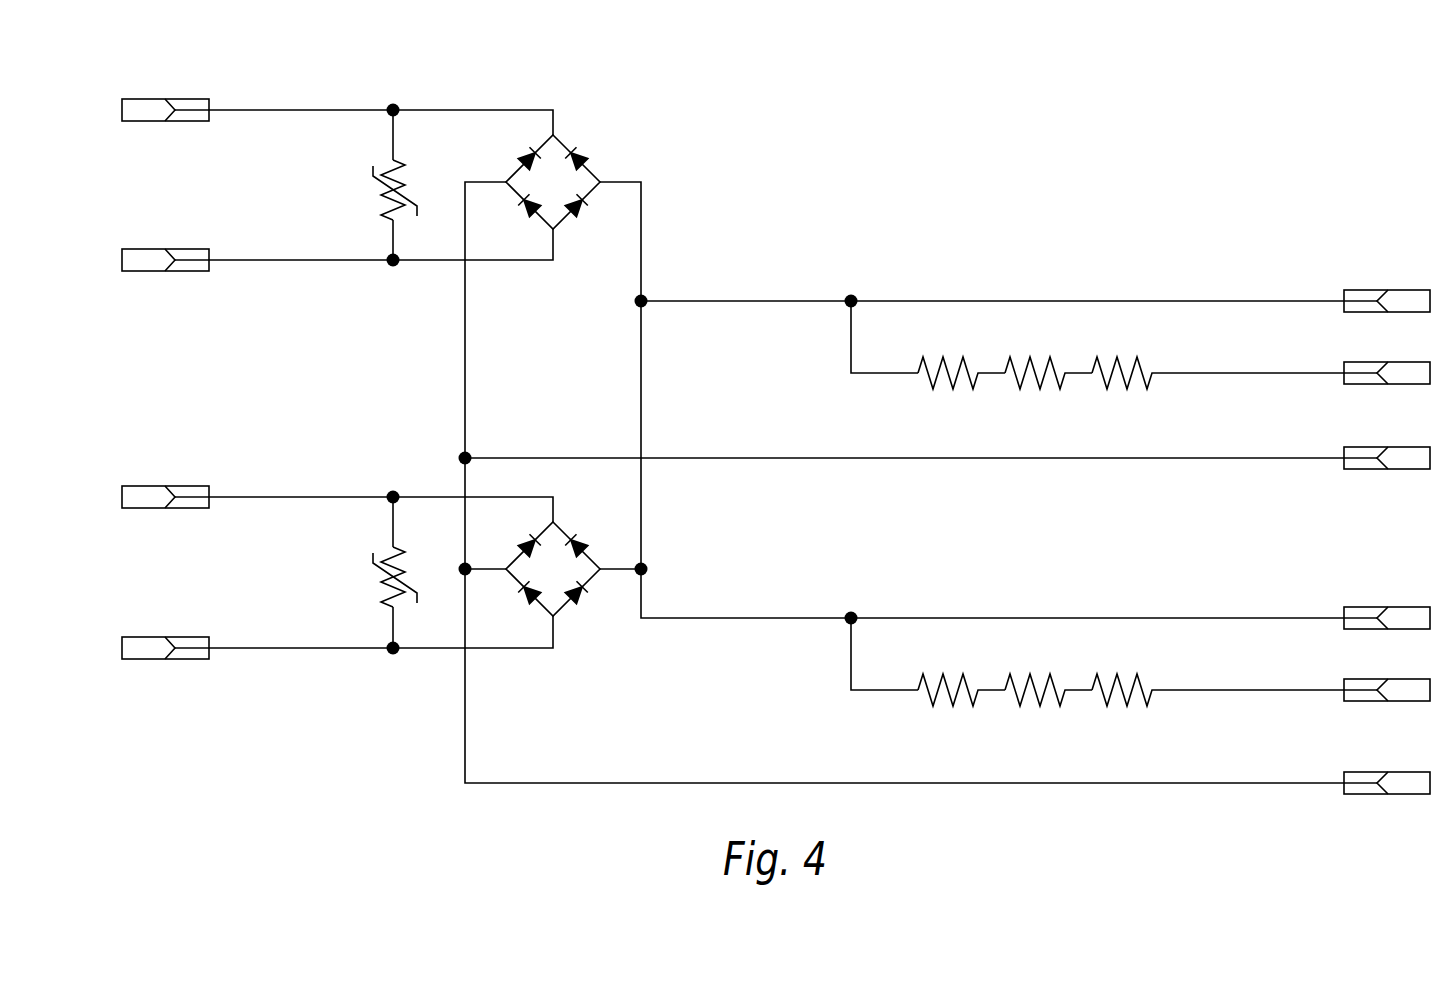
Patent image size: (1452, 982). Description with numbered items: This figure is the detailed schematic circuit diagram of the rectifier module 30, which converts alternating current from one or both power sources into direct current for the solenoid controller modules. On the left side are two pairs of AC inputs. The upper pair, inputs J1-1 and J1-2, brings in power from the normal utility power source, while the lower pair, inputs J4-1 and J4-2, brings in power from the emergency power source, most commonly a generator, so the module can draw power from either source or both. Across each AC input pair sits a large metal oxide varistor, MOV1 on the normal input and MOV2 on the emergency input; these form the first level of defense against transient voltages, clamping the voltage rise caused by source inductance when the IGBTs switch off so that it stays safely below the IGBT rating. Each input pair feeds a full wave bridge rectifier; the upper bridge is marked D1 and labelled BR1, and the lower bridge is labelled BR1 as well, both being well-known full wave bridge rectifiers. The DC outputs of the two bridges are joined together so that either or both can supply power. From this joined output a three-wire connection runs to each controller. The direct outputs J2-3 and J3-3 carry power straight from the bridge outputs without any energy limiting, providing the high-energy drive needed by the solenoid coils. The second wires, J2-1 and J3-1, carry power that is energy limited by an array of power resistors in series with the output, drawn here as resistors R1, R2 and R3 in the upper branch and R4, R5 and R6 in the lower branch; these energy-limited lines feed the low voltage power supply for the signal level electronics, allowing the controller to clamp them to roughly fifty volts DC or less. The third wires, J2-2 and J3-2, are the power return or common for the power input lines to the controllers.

The rectifier module 30 is at (800, 137).
The normal power source input J1-1 is at (165, 97).
The normal power source input J1-2 is at (165, 247).
The emergency power source input J4-1 is at (165, 486).
The emergency power source input J4-2 is at (165, 637).
The energy-limited output J2-1 is at (1387, 360).
The power return output J2-2 is at (1387, 446).
The direct rectifier output J2-3 is at (1387, 289).
The energy-limited output J3-1 is at (1387, 678).
The power return output J3-2 is at (1387, 772).
The direct rectifier output J3-3 is at (1387, 606).
The metal oxide varistor MOV1 is at (384, 185).
The metal oxide varistor MOV2 is at (384, 572).
The bridge rectifier D1 is at (525, 179).
The full wave bridge rectifier BR1 is at (553, 569).
The resistor R1 is at (961, 360).
The resistor R2 is at (1048, 360).
The resistor R3 is at (1218, 360).
The resistor R4 is at (961, 677).
The resistor R5 is at (1048, 677).
The resistor R6 is at (1218, 677).